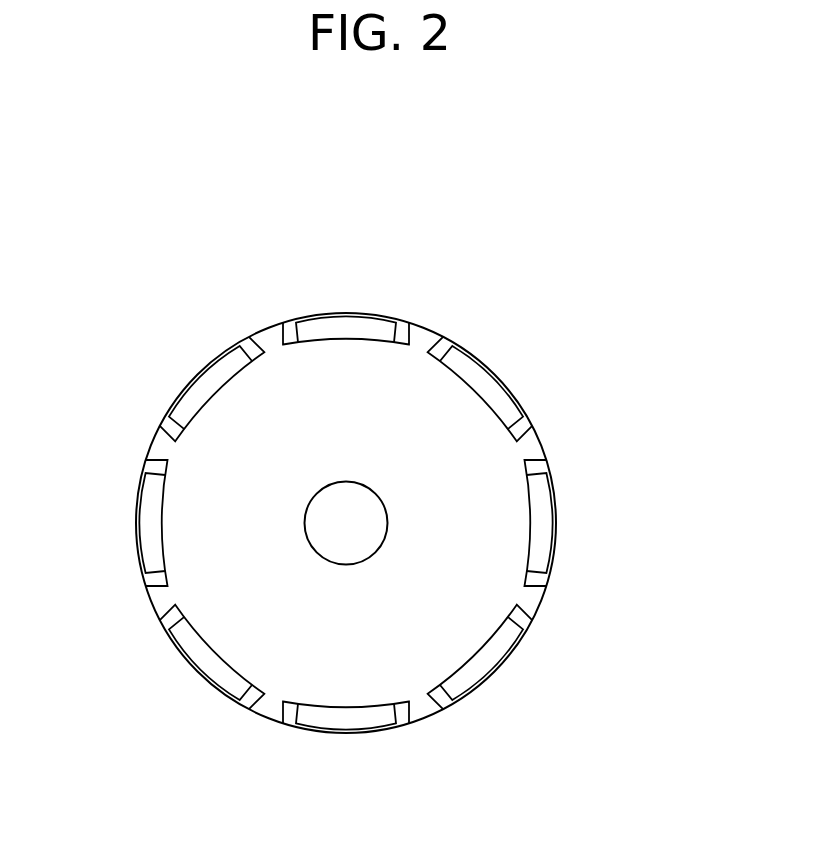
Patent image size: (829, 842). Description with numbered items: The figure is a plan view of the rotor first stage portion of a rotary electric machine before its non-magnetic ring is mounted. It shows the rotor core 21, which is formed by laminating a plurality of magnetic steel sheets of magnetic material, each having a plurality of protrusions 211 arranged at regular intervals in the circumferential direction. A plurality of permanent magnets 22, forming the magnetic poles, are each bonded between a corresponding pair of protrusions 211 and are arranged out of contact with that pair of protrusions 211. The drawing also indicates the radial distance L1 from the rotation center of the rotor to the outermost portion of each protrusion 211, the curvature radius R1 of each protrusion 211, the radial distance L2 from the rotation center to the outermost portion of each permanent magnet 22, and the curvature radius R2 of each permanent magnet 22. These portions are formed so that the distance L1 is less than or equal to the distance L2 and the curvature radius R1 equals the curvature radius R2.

The rotor core 21 is at (405, 482).
The protrusion 211 is at (160, 442).
The permanent magnet 22 is at (348, 325).
The radial distance to outermost portion of protrusion L1 is at (346, 523).
The radial distance to outermost portion of magnetic pole L2 is at (346, 523).
The curvature radius of protrusion R1 is at (150, 604).
The curvature radius of magnetic pole R2 is at (201, 676).